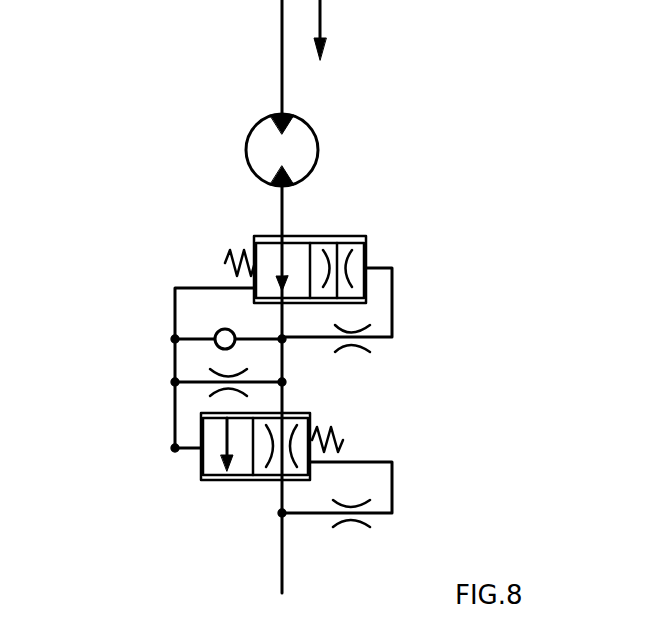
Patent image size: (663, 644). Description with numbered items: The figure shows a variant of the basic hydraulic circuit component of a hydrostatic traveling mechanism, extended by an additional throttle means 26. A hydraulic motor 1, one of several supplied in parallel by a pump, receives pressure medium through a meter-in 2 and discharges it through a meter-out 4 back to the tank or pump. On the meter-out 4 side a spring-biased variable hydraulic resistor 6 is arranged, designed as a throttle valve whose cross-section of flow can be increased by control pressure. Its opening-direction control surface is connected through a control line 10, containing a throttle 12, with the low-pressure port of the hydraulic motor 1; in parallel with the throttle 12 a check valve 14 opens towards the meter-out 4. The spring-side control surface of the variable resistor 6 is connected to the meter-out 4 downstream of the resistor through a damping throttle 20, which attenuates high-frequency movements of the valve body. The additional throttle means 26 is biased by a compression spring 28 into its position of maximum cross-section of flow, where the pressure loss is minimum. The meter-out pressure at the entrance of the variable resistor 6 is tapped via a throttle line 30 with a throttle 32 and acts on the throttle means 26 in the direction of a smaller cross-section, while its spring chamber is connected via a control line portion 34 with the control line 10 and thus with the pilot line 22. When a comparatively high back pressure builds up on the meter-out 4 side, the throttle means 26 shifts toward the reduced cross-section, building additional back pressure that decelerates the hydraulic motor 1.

The hydraulic motor 1 is at (307, 146).
The meter-in 2 is at (280, 52).
The meter-out 4 is at (290, 363).
The variable hydraulic resistor 6 is at (229, 505).
The control line 10 is at (175, 400).
The throttle 12 is at (225, 368).
The check valve 14 is at (218, 330).
The damping throttle 20 is at (350, 523).
The pilot line 22 is at (175, 448).
The throttle means 26 is at (368, 248).
The compression spring 28 is at (225, 263).
The throttle line 30 is at (393, 310).
The throttle 32 is at (350, 347).
The control line portion 34 is at (173, 321).